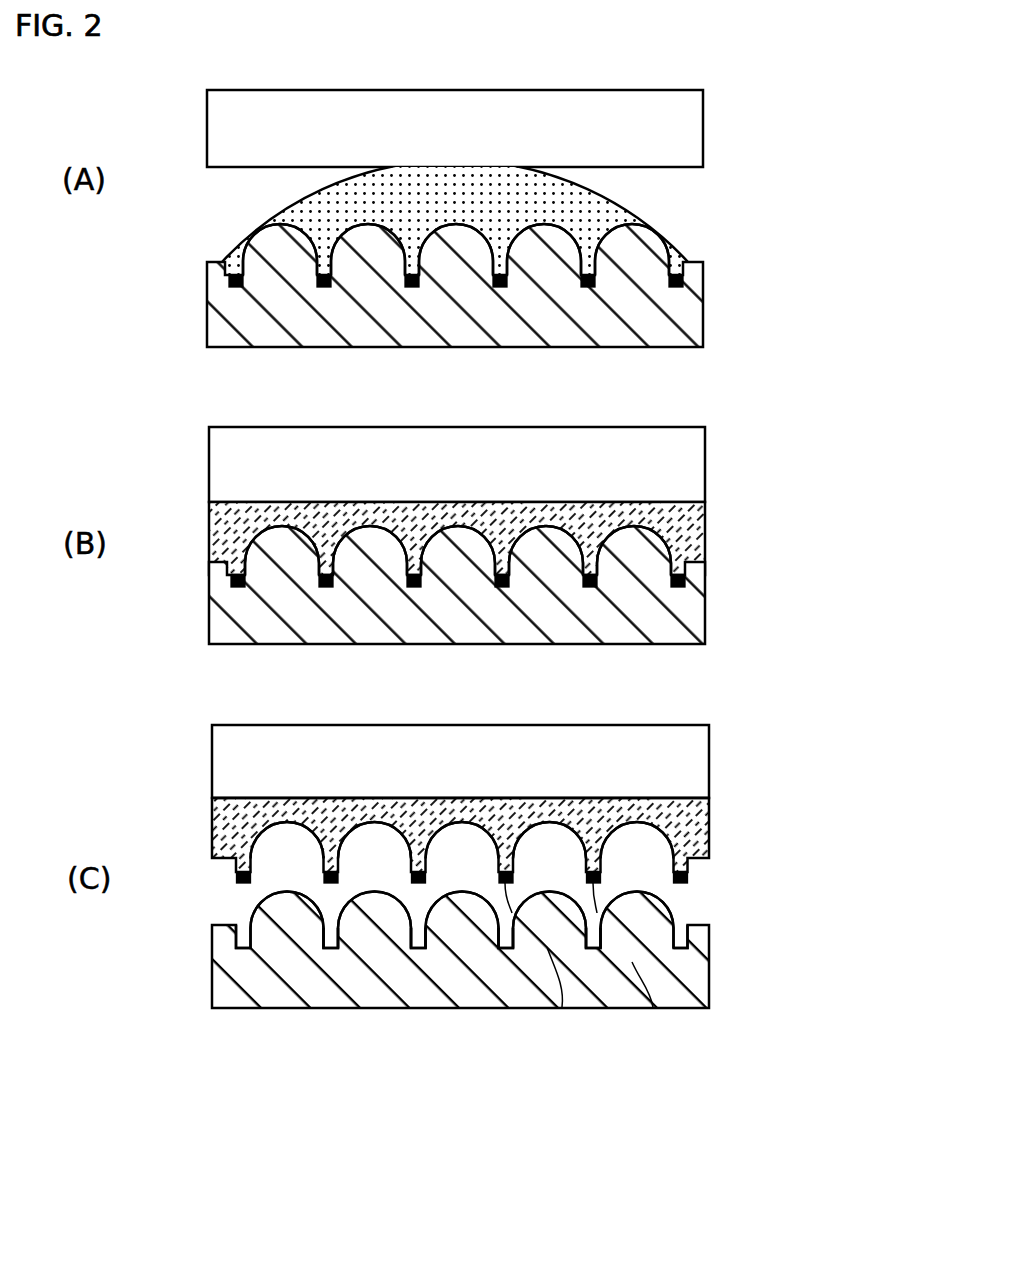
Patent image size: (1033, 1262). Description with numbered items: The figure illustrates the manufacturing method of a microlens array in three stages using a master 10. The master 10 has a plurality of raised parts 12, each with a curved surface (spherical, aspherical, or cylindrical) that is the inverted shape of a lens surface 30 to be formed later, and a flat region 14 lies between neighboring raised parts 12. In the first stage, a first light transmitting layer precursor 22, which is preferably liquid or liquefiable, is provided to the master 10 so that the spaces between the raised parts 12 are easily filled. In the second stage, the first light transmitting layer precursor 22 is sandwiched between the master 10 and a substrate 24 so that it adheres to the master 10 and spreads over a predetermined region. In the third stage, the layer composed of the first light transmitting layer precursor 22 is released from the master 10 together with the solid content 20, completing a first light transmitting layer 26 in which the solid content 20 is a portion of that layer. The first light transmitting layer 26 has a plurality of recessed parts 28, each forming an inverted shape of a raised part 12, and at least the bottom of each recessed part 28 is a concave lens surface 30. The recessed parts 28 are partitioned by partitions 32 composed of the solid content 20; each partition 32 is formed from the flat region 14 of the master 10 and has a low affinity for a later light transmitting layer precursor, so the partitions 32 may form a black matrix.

The master 10 is at (688, 312).
The raised part 12 is at (640, 257).
The flat region 14 is at (680, 940).
The solid content 20 is at (683, 277).
The first light transmitting layer precursor 22 is at (622, 205).
The substrate 24 is at (695, 128).
The first light transmitting layer 26 is at (709, 822).
The recessed part 28 is at (635, 843).
The lens surface 30 is at (680, 798).
The partition 32 is at (562, 1007).